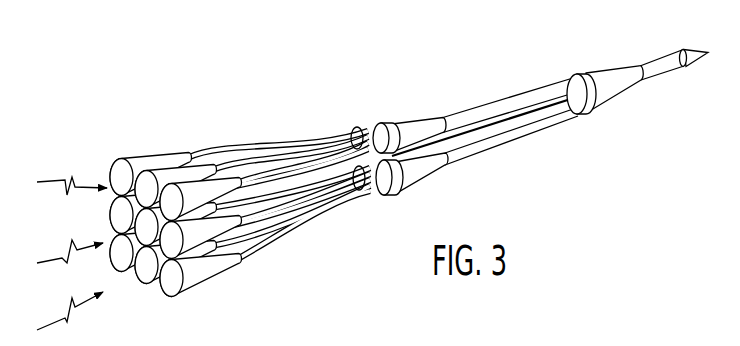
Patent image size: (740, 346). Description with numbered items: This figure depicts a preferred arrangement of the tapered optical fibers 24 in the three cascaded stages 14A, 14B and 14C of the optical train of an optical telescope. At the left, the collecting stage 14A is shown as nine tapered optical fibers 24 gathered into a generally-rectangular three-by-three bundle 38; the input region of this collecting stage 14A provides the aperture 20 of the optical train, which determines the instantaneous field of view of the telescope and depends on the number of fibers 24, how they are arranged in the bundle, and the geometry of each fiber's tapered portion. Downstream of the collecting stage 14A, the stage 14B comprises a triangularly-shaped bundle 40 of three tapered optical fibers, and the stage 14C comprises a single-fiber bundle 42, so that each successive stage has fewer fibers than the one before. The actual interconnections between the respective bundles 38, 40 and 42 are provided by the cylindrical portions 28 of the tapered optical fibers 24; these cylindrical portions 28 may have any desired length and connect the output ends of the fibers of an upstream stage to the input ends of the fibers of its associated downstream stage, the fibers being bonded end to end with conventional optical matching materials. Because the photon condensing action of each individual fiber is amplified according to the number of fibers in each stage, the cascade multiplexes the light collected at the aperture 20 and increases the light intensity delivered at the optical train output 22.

The collecting stage 14A is at (127, 148).
The stage 14B is at (374, 113).
The stage 14C is at (567, 62).
The aperture 20 is at (127, 260).
The optical train output 22 is at (667, 75).
The tapered optical fibers 24 is at (212, 272).
The cylindrical portions 28 is at (347, 187).
The bundle 38 is at (148, 160).
The bundle 40 is at (408, 124).
The single-fiber bundle 42 is at (606, 70).